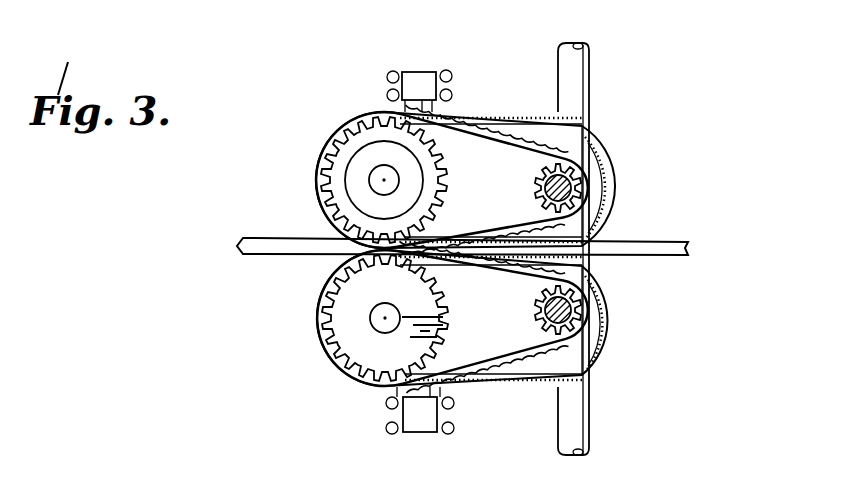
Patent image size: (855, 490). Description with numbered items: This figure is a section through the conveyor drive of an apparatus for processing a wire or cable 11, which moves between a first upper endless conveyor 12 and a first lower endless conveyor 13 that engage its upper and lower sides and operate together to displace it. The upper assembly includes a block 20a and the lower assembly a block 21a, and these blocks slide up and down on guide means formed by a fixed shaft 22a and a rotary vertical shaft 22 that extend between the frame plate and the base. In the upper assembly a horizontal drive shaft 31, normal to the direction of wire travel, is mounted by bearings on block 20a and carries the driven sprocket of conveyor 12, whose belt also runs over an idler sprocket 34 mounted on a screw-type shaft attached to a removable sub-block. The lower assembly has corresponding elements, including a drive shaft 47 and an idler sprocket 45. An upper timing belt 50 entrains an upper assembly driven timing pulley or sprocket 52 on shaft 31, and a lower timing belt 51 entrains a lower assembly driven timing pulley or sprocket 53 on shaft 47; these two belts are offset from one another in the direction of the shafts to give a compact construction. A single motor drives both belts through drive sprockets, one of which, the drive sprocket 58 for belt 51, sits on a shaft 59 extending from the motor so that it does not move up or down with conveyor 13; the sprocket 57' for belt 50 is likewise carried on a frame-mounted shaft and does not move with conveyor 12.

The wire or cable 11 is at (678, 241).
The first upper endless conveyor 12 is at (605, 128).
The first lower endless conveyor 13 is at (612, 344).
The block 20a is at (525, 118).
The block 21a is at (490, 386).
The rotary vertical shaft 22 is at (410, 80).
The fixed shaft 22a is at (585, 44).
The drive shaft 31 is at (372, 184).
The idler sprocket 34 is at (598, 157).
The idler sprocket 45 is at (603, 358).
The drive shaft 47 is at (370, 318).
The upper timing belt 50 is at (478, 112).
The lower timing belt 51 is at (525, 388).
The upper assembly driven timing pulley or sprocket 52 is at (320, 178).
The lower assembly driven timing pulley or sprocket 53 is at (340, 334).
The upper sprocket shaft 57' is at (621, 188).
The drive sprocket 58 is at (606, 313).
The shaft 59 is at (600, 292).